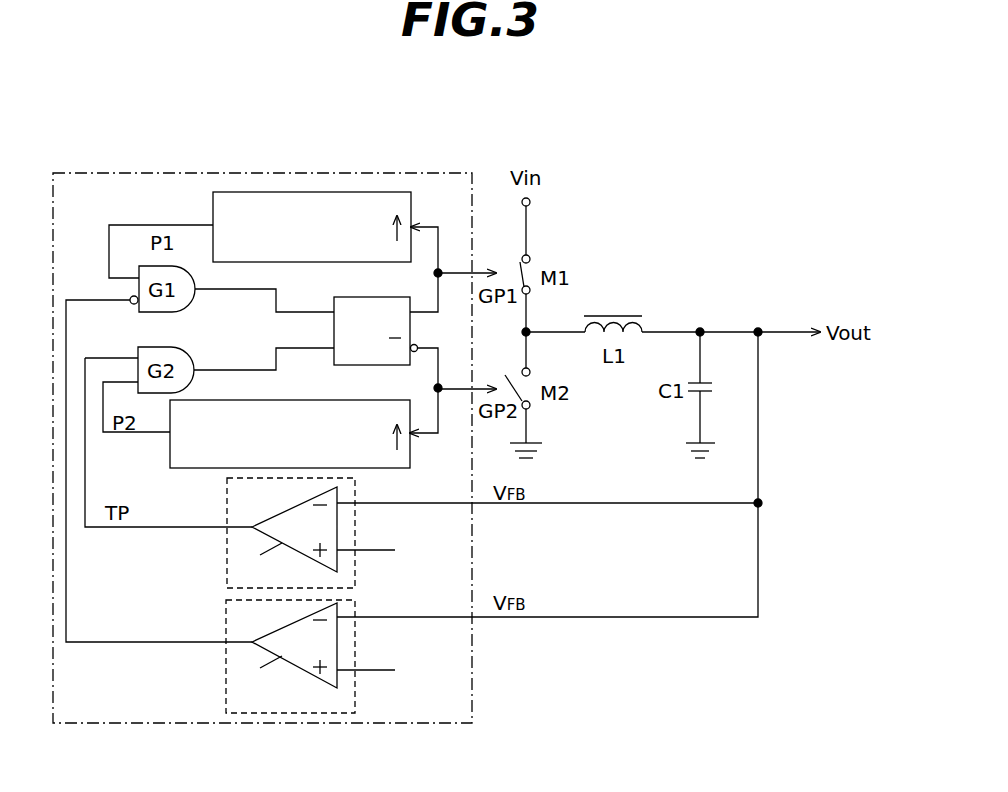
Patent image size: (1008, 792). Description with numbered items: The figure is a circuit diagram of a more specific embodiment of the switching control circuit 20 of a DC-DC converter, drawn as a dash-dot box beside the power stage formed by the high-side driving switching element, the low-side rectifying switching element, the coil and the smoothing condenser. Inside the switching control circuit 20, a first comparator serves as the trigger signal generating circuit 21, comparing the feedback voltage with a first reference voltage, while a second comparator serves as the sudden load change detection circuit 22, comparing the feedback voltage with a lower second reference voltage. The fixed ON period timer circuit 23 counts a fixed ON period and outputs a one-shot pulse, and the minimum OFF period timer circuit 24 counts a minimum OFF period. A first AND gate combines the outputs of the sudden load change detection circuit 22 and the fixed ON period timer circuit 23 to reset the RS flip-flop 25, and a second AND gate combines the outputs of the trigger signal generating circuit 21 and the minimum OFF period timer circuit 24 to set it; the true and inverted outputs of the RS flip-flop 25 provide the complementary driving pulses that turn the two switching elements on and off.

The switching control circuit 20 is at (472, 703).
The trigger signal generating circuit 21 is at (226, 547).
The sudden load change detection circuit 22 is at (226, 663).
The fixed ON period timer circuit 23 is at (213, 202).
The minimum OFF period timer circuit 24 is at (170, 450).
The RS flip-flop 25 is at (333, 357).